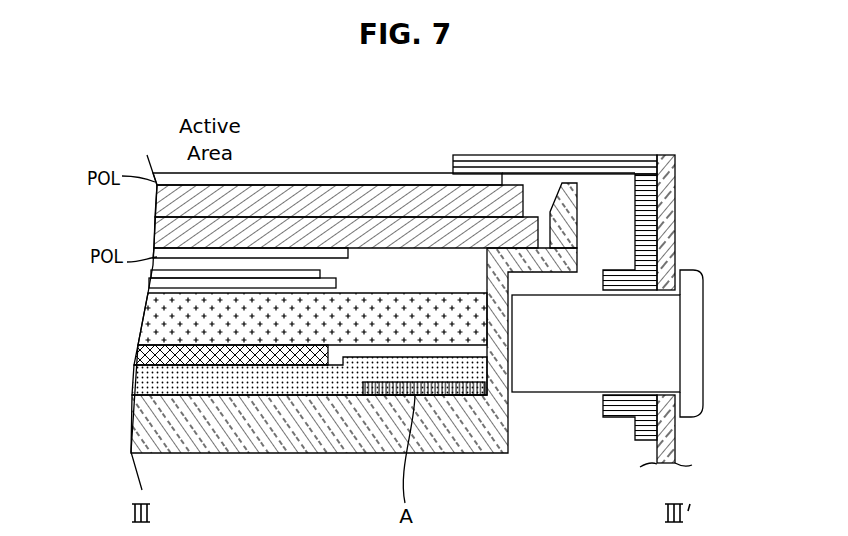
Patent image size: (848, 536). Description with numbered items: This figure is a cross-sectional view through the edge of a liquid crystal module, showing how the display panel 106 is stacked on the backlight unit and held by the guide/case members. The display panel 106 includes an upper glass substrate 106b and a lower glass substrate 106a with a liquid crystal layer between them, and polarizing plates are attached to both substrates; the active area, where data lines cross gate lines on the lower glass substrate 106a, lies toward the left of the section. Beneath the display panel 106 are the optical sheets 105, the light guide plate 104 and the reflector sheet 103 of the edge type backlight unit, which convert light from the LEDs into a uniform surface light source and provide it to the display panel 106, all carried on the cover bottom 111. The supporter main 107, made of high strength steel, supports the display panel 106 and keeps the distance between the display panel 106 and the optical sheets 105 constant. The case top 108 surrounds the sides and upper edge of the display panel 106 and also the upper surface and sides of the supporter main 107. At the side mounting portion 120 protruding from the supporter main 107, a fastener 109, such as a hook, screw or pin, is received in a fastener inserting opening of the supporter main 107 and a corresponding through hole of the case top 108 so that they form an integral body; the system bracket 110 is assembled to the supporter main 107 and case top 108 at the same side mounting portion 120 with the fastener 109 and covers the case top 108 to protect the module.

The reflector sheet 103 is at (137, 350).
The light guide plate 104 is at (150, 322).
The optical sheets 105 is at (143, 270).
The display panel 106 is at (57, 195).
The lower glass substrate 106a is at (157, 233).
The upper glass substrate 106b is at (157, 207).
The supporter main 107 is at (136, 422).
The case top 108 is at (615, 167).
The fastener 109 is at (690, 354).
The system bracket 110 is at (664, 166).
The cover bottom 111 is at (133, 379).
The side mounting portion 120 is at (714, 250).